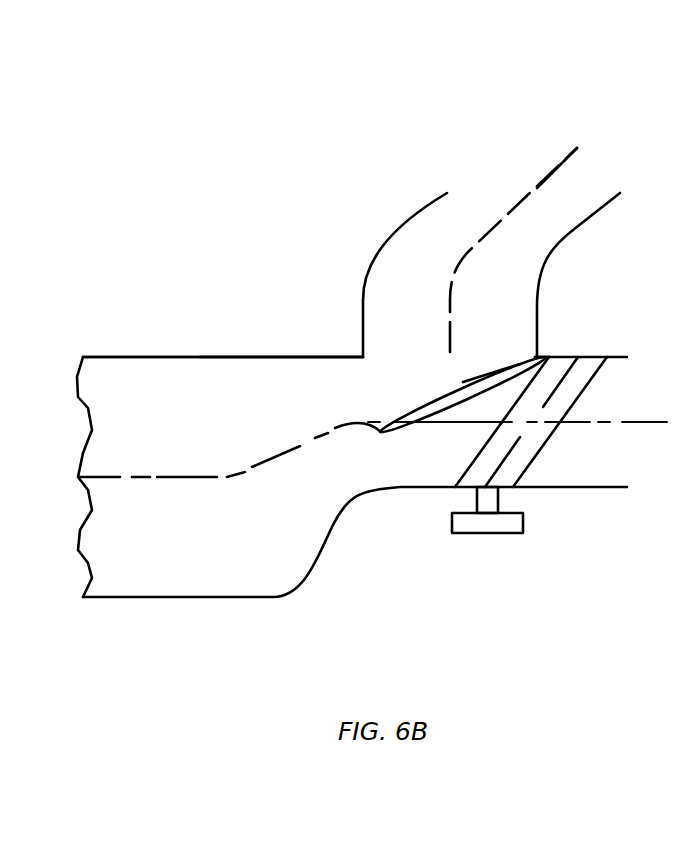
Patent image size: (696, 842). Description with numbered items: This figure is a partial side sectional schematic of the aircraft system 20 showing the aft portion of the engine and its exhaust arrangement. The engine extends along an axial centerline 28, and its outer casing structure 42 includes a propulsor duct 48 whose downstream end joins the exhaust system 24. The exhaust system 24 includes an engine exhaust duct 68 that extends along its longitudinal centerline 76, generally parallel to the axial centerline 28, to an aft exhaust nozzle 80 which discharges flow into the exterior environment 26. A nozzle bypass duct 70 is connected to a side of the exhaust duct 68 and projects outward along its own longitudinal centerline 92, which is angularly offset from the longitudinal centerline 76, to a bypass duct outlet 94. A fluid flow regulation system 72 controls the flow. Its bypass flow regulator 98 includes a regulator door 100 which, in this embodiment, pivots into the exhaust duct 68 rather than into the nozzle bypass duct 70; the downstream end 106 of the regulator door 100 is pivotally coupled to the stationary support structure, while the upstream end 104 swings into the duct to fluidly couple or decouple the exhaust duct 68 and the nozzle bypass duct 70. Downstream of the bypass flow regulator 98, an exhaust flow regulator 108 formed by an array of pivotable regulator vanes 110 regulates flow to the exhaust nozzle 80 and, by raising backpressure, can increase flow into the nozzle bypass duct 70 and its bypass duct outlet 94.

The gas turbine engine 20 is at (355, 337).
The exhaust system 24 is at (302, 187).
The exterior environment 26 is at (690, 227).
The axial centerline 28 is at (118, 477).
The outer casing structure 42 is at (131, 345).
The propulsor duct 48 is at (99, 357).
The engine exhaust duct 68 is at (243, 345).
The nozzle bypass duct 70 is at (404, 222).
The fluid flow regulation system 72 is at (593, 333).
The longitudinal centerline of the exhaust duct 76 is at (267, 463).
The exhaust nozzle 80 is at (622, 387).
The longitudinal centerline of the nozzle bypass duct 92 is at (568, 160).
The bypass duct outlet 94 is at (473, 208).
The bypass flow regulator 98 is at (418, 396).
The regulator door 100 is at (488, 372).
The upstream end of the regulator door 104 is at (380, 436).
The downstream end of the regulator door 106 is at (545, 354).
The exhaust flow regulator 108 is at (553, 455).
The regulator vanes 110 is at (483, 450).